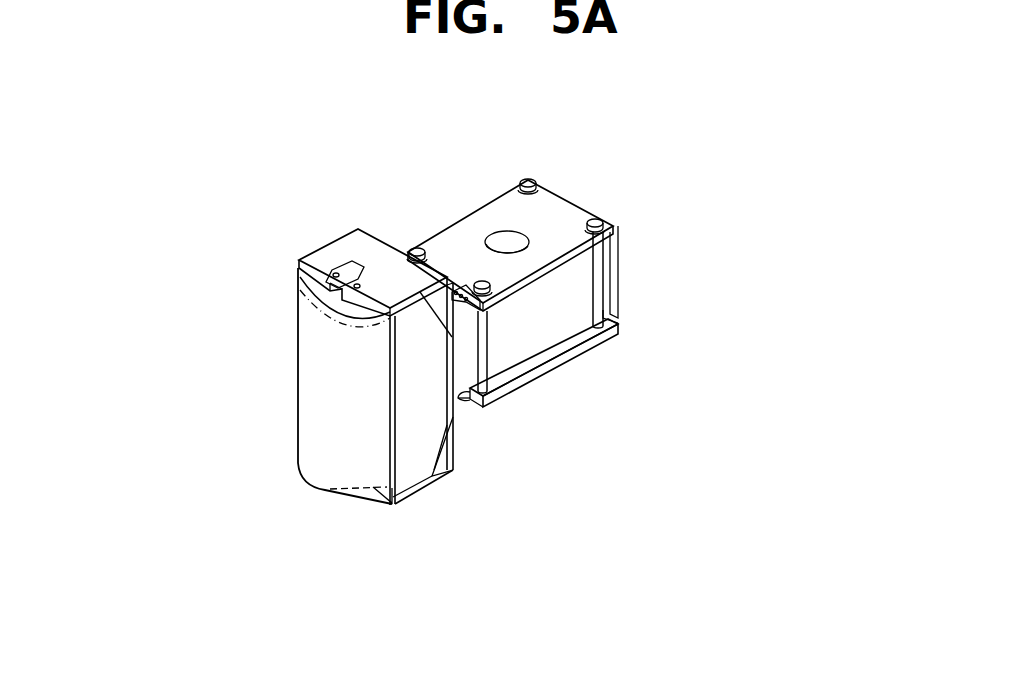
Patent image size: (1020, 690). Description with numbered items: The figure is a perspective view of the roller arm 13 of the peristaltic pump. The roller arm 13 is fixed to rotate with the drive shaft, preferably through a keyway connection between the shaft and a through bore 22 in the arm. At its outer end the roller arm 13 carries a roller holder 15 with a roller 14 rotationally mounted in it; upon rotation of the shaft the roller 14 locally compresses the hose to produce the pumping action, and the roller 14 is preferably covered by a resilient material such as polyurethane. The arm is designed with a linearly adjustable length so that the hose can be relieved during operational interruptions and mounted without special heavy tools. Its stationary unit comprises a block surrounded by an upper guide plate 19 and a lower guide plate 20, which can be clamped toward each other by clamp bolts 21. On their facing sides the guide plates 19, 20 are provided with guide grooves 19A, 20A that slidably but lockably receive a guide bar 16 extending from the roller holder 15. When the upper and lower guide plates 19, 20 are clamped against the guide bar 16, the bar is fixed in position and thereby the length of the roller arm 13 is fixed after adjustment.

The roller arm 13 is at (372, 190).
The roller 14 is at (332, 415).
The roller holder 15 is at (420, 415).
The guide bar 16 is at (505, 348).
The upper guide plate 19 is at (537, 207).
The guide groove 19A is at (465, 295).
The lower guide plate 20 is at (578, 353).
The guide groove 20A is at (472, 402).
The clamp bolt 21 is at (598, 281).
The through bore 22 is at (528, 239).